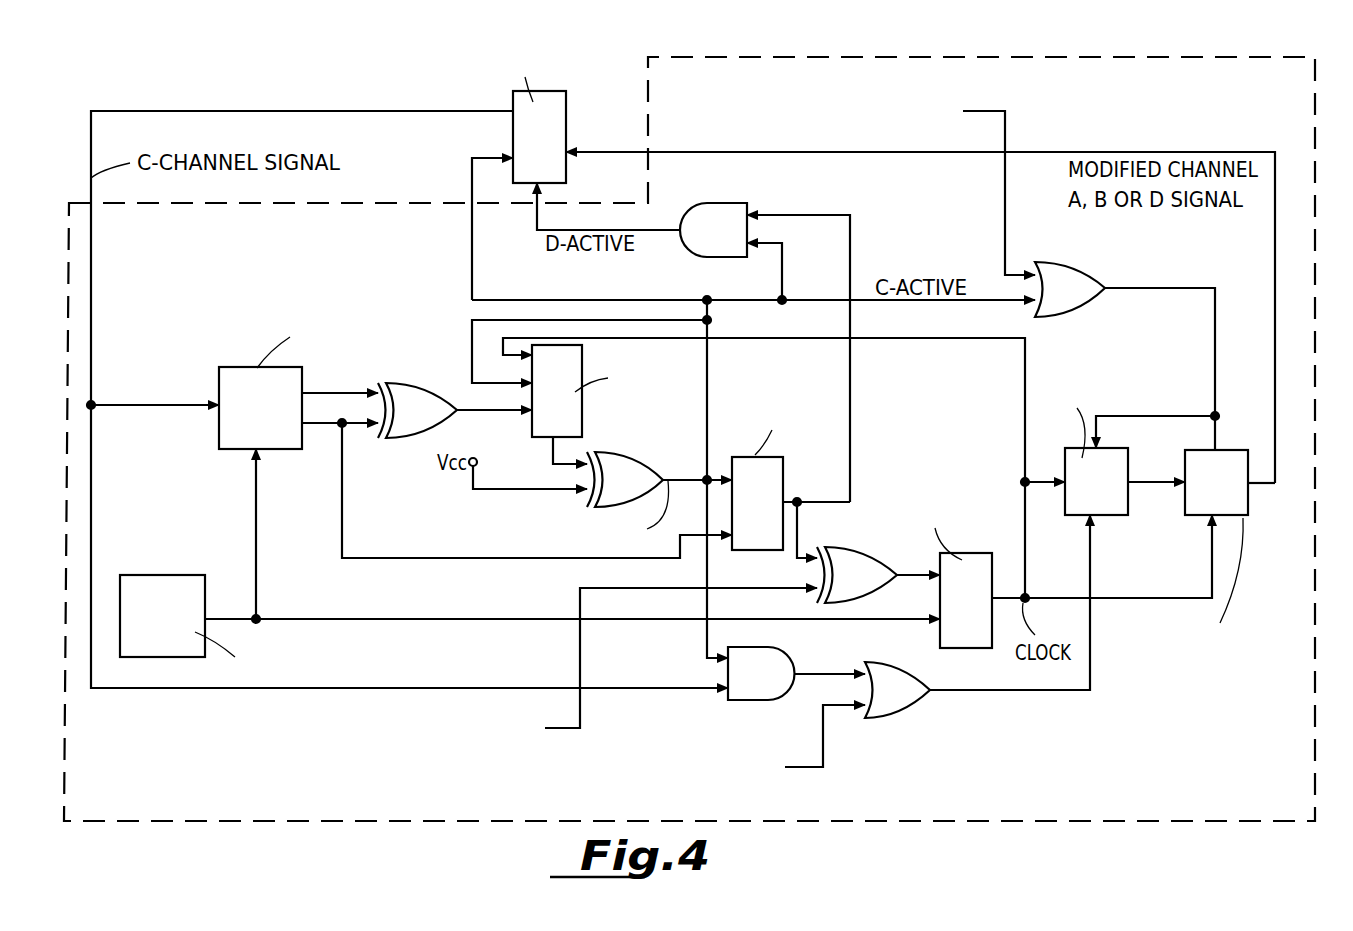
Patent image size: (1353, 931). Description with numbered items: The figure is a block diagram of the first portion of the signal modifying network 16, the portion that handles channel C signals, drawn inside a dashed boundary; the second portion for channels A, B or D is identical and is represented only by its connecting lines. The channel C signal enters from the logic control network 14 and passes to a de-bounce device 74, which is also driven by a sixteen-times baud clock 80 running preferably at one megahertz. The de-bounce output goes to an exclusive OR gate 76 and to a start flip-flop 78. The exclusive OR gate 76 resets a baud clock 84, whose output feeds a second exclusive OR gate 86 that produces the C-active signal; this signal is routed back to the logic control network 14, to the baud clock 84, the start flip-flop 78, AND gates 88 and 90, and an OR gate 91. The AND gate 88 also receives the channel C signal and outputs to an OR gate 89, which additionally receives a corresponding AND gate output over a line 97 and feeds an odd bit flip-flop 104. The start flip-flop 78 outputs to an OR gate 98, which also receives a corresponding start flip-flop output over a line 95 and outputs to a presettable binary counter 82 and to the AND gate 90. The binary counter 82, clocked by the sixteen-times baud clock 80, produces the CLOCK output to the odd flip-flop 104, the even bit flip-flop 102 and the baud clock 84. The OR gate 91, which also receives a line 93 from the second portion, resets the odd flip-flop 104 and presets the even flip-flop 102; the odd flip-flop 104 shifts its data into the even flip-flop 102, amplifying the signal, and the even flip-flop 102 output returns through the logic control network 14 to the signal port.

The logic control network 14 is at (527, 146).
The modifying network 16 is at (300, 821).
The de-bounce device 74 is at (248, 419).
The exclusive OR gate 76 is at (408, 423).
The start flip-flop 78 is at (745, 516).
The 16x baud clock 80 is at (150, 628).
The binary counter 82 is at (954, 613).
The baud clock 84 is at (545, 401).
The exclusive OR gate 86 is at (616, 493).
The AND gate 88 is at (750, 687).
The OR gate 89 is at (888, 703).
The AND gate 90 is at (706, 243).
The OR gate 91 is at (1058, 303).
The line 93 is at (1005, 128).
The line 95 is at (578, 645).
The line 97 is at (823, 740).
The OR gate 98 is at (848, 588).
The even bit flip-flop 102 is at (1201, 496).
The odd bit flip-flop 104 is at (1080, 496).